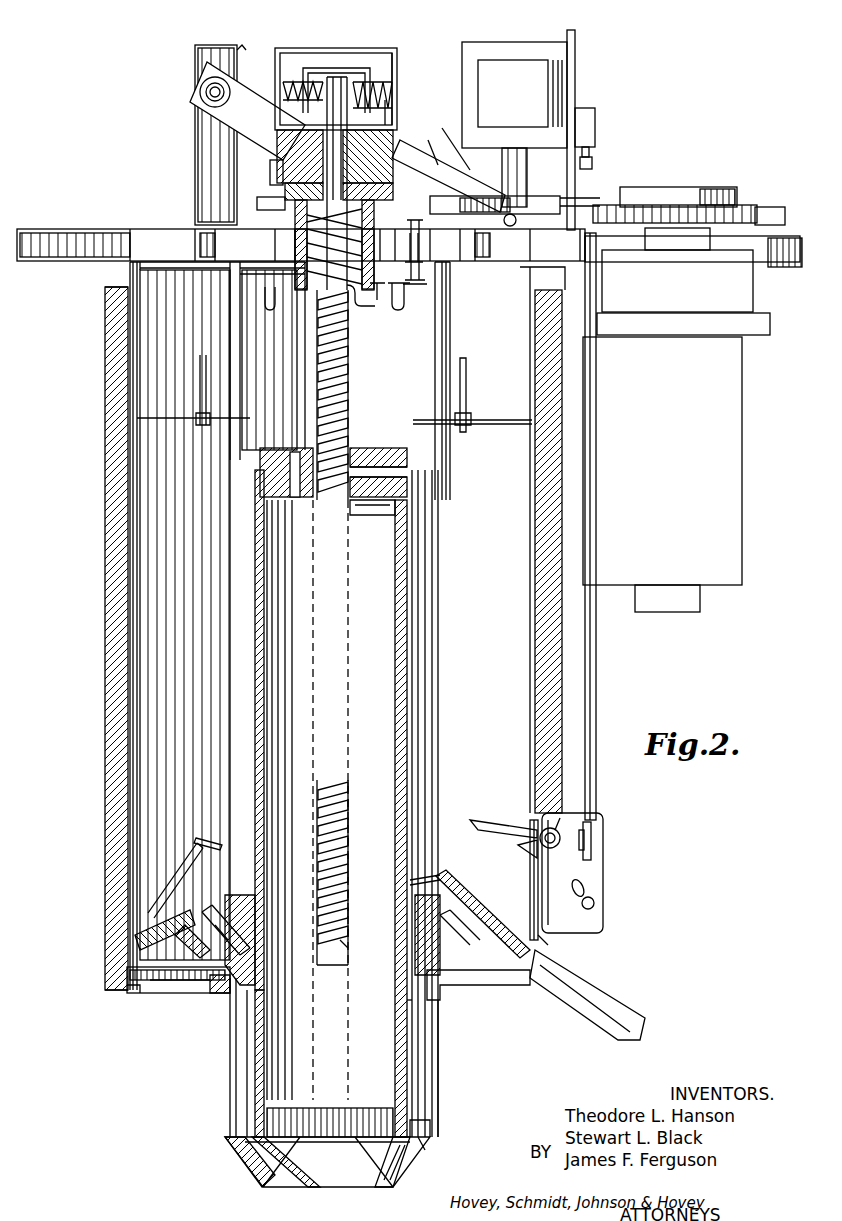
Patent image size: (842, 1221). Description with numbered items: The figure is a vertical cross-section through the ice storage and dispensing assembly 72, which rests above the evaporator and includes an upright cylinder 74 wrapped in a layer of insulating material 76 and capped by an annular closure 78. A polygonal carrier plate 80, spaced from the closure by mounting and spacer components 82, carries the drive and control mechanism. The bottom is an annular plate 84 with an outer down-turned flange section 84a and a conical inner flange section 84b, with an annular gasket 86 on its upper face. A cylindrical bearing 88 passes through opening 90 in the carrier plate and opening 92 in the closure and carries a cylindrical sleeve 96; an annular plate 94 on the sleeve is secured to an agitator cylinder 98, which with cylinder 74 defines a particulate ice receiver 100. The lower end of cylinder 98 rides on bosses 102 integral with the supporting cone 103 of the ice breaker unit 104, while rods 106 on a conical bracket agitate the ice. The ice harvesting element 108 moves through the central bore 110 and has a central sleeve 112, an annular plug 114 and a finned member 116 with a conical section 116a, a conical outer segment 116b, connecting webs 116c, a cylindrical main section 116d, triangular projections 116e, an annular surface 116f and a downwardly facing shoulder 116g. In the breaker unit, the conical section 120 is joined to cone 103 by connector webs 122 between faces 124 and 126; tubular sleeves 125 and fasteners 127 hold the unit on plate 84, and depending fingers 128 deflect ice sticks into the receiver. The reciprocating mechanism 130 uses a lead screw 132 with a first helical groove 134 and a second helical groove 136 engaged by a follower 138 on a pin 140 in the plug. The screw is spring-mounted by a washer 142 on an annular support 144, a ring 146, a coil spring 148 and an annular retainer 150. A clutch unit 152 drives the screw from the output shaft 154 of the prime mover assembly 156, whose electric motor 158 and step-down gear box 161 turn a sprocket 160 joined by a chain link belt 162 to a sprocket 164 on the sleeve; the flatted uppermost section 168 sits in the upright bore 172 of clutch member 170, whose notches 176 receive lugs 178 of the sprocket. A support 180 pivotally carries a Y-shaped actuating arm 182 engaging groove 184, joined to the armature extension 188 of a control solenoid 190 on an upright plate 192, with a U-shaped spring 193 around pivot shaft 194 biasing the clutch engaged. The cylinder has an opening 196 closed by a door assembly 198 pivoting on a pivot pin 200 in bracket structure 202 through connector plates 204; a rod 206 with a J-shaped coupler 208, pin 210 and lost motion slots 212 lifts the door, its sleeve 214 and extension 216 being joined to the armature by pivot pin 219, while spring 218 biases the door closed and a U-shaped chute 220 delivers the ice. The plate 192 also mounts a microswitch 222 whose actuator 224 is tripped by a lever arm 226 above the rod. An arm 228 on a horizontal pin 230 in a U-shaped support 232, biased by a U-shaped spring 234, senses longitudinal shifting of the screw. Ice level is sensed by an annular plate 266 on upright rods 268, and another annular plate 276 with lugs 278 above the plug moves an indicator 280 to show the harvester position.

The ice storage and dispensing assembly 72 is at (98, 608).
The upright cylinder 74 is at (138, 745).
The cylindrical layer of insulating material 76 is at (105, 712).
The annular closure 78 is at (155, 270).
The polygonal carrier plate 80 is at (106, 229).
The mounting and spacer components 82 is at (218, 243).
The annular plate 84 is at (160, 993).
The outer down-turned flange section 84a is at (135, 993).
The conical inner flange section 84b is at (218, 995).
The annular gasket 86 is at (190, 982).
The cylindrical bearing 88 is at (296, 250).
The opening 90 is at (375, 250).
The opening 92 is at (405, 299).
The annular plate 94 is at (290, 312).
The cylindrical sleeve 96 is at (377, 299).
The agitator cylinder 98 is at (217, 361).
The particulate ice receiver 100 is at (194, 608).
The bosses 102 is at (400, 885).
The supporting cone 103 is at (442, 905).
The ice breaker unit 104 is at (143, 915).
The rods 106 is at (190, 850).
The ice harvesting element 108 is at (238, 1172).
The central bore 110 is at (256, 915).
The elongated central sleeve 112 is at (265, 734).
The annular plug 114 is at (369, 448).
The finned member 116 is at (230, 1060).
The conically shaped section 116a is at (364, 1144).
The conical outer segment 116b is at (398, 1182).
The webs 116c is at (280, 1180).
The cylindrical main section 116d is at (420, 1040).
The triangular projections 116e is at (440, 1064).
The annular surface 116f is at (425, 1125).
The downwardly facing shoulder 116g is at (428, 1142).
The conical section 120 is at (468, 912).
The connector webs 122 is at (206, 905).
The face 124 is at (192, 915).
The tubular sleeves 125 is at (508, 924).
The face 126 is at (228, 918).
The fasteners 127 is at (470, 990).
The fingers 128 is at (275, 985).
The reciprocating mechanism 130 is at (376, 44).
The lead screw 132 is at (350, 370).
The first helical groove 134 is at (340, 780).
The second helical groove 136 is at (345, 935).
The follower 138 is at (372, 509).
The pin 140 is at (392, 467).
The washer 142 is at (292, 306).
The annular support 144 is at (364, 306).
The ring 146 is at (328, 165).
The coil spring 148 is at (334, 251).
The annular retainer 150 is at (372, 156).
The clutch unit 152 is at (440, 144).
The output shaft 154 is at (672, 230).
The prime mover assembly 156 is at (708, 602).
The electric motor 158 is at (742, 440).
The sprocket 160 is at (736, 188).
The step-down gear box 161 is at (750, 290).
The chain link belt 162 is at (758, 198).
The sprocket 164 is at (264, 197).
The uppermost section 168 is at (337, 77).
The clutch member 170 is at (368, 112).
The upright bore 172 is at (312, 122).
The notches 176 is at (405, 170).
The lugs 178 is at (269, 175).
The support 180 is at (195, 132).
The actuating arm 182 is at (480, 178).
The groove 184 is at (435, 141).
The armature extension 188 is at (520, 166).
The control solenoid 190 is at (495, 42).
The upright plate 192 is at (576, 55).
The U-shaped spring 193 is at (244, 50).
The pivot shaft 194 is at (198, 90).
The opening 196 is at (528, 862).
The door assembly 198 is at (545, 945).
The pivot pin 200 is at (520, 824).
The bracket structure 202 is at (584, 845).
The connector plates 204 is at (604, 928).
The rod 206 is at (598, 660).
The coupler 208 is at (592, 852).
The pin 210 is at (596, 903).
The lost motion slots 212 is at (574, 895).
The sleeve 214 is at (600, 190).
The extension 216 is at (535, 200).
The spring 218 is at (560, 826).
The pivot pin 219 is at (518, 222).
The U-shaped chute 220 is at (595, 1015).
The microswitch 222 is at (595, 112).
The actuator 224 is at (592, 150).
The lever arm 226 is at (594, 160).
The arm 228 is at (353, 68).
The horizontal pin 230 is at (398, 100).
The U-shaped support 232 is at (398, 55).
The U-shaped spring 234 is at (288, 82).
The annular plate 266 is at (485, 428).
The rods 268 is at (472, 372).
The annular plate 276 is at (430, 284).
The lugs 278 is at (272, 300).
The indicator 280 is at (431, 247).